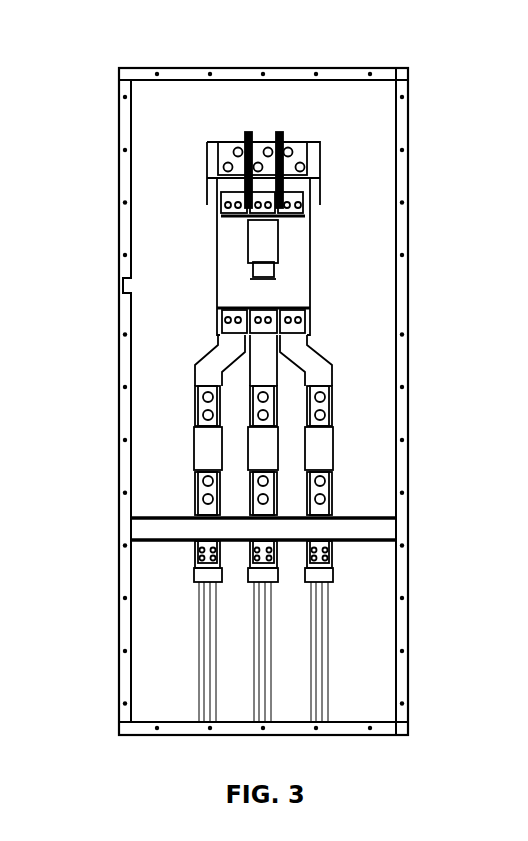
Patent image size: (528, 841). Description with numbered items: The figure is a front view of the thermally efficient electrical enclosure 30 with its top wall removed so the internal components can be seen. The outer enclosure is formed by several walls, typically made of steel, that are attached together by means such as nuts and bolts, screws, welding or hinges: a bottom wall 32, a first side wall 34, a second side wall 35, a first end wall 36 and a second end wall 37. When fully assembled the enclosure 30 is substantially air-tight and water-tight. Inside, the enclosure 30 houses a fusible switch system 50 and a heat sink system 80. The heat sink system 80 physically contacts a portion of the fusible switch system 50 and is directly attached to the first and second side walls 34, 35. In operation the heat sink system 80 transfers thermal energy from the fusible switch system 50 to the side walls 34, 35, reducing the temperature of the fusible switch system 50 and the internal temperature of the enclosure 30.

The thermally efficient electrical enclosure 30 is at (426, 81).
The bottom wall 32 is at (186, 139).
The first side wall 34 is at (119, 232).
The second side wall 35 is at (410, 237).
The first end wall 36 is at (153, 67).
The second end wall 37 is at (380, 737).
The fusible switch system 50 is at (345, 212).
The heat sink system 80 is at (348, 514).